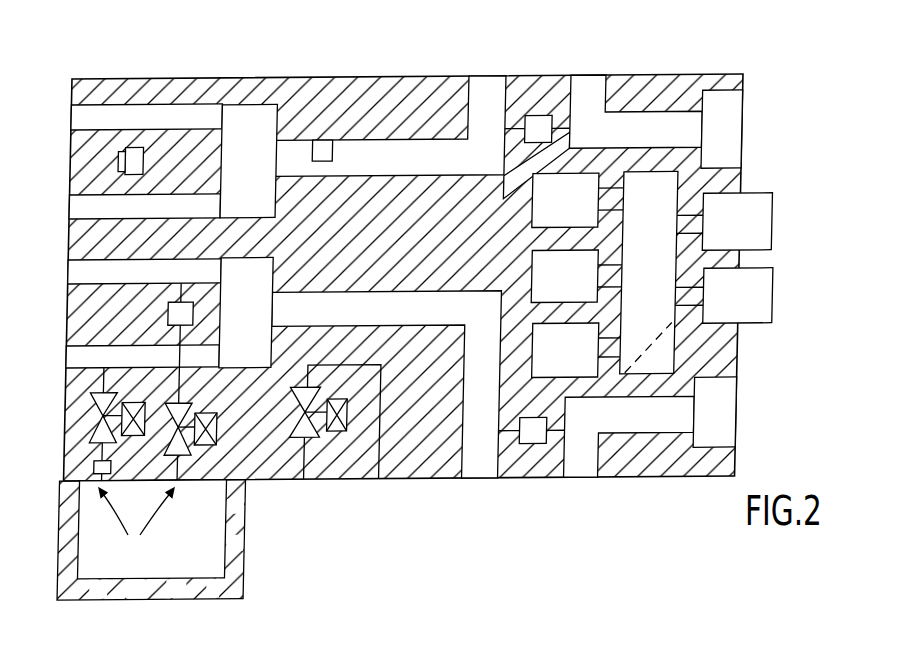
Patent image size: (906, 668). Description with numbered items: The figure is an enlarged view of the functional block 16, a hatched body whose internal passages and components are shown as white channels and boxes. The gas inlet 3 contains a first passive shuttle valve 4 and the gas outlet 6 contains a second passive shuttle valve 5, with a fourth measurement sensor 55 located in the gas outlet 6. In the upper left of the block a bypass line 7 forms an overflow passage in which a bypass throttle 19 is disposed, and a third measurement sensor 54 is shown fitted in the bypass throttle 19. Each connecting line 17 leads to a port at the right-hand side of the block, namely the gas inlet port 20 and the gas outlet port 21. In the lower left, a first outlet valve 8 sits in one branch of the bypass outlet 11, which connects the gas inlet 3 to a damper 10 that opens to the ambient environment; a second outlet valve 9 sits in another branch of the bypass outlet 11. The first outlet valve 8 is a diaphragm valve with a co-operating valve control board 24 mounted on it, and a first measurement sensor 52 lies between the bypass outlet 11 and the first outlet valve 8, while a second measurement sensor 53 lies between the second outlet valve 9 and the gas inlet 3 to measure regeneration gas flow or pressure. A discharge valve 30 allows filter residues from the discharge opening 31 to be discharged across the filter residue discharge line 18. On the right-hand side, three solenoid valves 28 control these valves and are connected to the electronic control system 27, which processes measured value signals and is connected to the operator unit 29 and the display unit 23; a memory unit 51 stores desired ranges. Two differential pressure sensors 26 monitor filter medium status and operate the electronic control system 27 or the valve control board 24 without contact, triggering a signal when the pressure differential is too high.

The gas inlet 3 is at (481, 329).
The first passive shuttle valve 4 is at (244, 330).
The second passive shuttle valve 5 is at (243, 193).
The gas outlet 6 is at (482, 169).
The bypass line 7 is at (122, 186).
The first outlet valve 8 is at (93, 437).
The second outlet valve 9 is at (183, 483).
The damper 10 is at (188, 590).
The bypass outlet 11 is at (136, 527).
The functional block 16 is at (384, 77).
The connecting line 17 is at (648, 130).
The filter residue discharge line 18 is at (380, 427).
The bypass throttle 19 is at (138, 156).
The gas inlet port 20 is at (736, 407).
The gas outlet port 21 is at (743, 128).
The display unit 23 is at (727, 314).
The valve control board 24 is at (205, 447).
The differential pressure sensor 26 is at (540, 130).
The electronic control system 27 is at (640, 286).
The solenoid valve 28 is at (556, 221).
The operator unit 29 is at (723, 239).
The discharge valve 30 is at (310, 437).
The discharge opening for filter residues 31 is at (302, 485).
The memory unit 51 is at (660, 367).
The first measurement sensor 52 is at (95, 466).
The second measurement sensor 53 is at (168, 312).
The third measurement sensor 54 is at (125, 160).
The fourth measurement sensor 55 is at (322, 148).